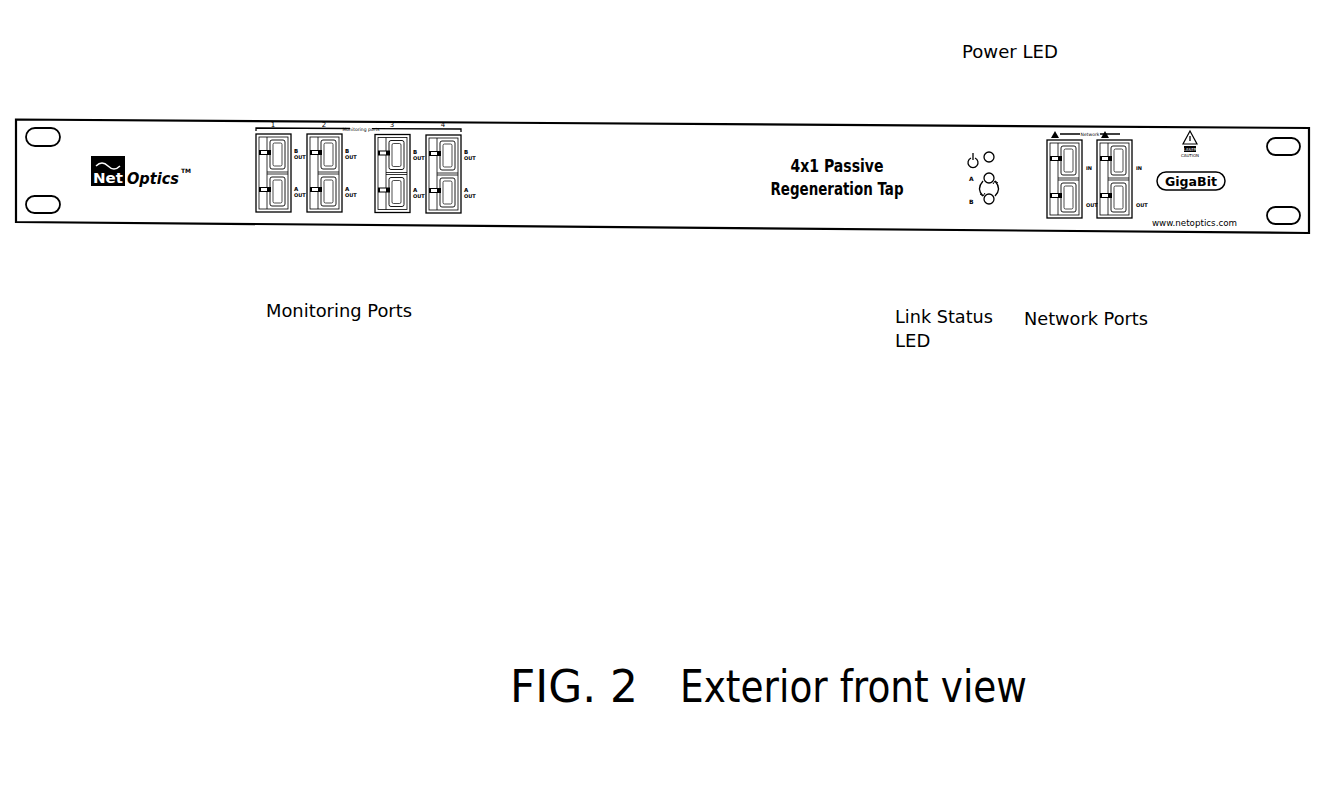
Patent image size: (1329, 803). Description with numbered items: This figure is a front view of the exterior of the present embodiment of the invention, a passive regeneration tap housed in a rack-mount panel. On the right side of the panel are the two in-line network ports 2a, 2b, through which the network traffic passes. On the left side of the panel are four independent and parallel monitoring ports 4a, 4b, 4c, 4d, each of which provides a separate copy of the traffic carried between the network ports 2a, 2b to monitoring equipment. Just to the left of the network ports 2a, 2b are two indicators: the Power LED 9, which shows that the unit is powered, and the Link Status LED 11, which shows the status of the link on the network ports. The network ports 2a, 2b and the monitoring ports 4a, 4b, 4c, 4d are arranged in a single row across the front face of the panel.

The in-line network port 2a is at (1067, 218).
The in-line network port 2b is at (1117, 218).
The monitoring port 4a is at (273, 213).
The monitoring port 4b is at (322, 213).
The monitoring port 4c is at (393, 213).
The monitoring port 4d is at (443, 213).
The Power LED 9 is at (990, 152).
The Link Status LED 11 is at (990, 204).